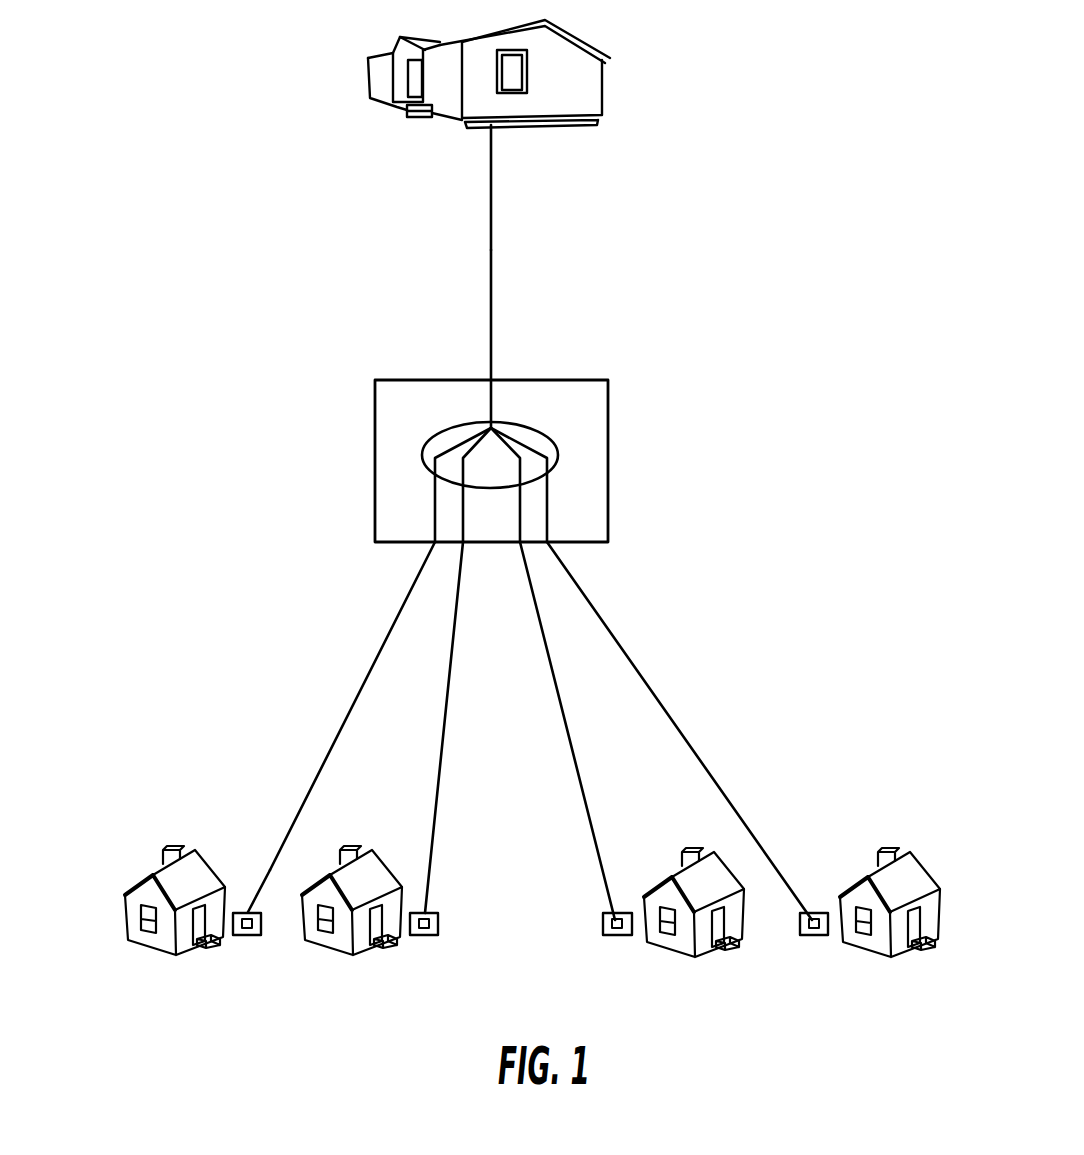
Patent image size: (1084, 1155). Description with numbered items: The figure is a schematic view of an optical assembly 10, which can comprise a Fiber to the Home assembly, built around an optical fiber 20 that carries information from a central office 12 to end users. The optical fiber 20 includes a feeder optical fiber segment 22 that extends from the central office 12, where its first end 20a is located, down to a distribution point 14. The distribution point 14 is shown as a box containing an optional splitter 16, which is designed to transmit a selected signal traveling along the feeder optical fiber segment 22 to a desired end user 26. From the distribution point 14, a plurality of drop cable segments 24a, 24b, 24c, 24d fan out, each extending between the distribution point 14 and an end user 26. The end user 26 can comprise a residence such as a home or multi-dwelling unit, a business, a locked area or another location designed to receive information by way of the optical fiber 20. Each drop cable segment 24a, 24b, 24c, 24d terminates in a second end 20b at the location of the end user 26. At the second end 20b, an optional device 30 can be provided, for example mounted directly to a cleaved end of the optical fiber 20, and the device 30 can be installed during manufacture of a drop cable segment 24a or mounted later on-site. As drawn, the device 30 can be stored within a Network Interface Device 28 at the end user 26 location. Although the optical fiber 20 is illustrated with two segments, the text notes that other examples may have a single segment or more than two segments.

The optical assembly 10 is at (662, 348).
The central office 12 is at (603, 82).
The distribution point 14 is at (608, 503).
The splitter 16 is at (555, 438).
The optical fiber 20 is at (515, 357).
The first end 20a is at (491, 147).
The second end 20b is at (261, 923).
The feeder optical fiber segment 22 is at (491, 255).
The drop cable segment 24a is at (325, 765).
The drop cable segment 24b is at (443, 748).
The drop cable segment 24c is at (578, 770).
The drop cable segment 24d is at (698, 757).
The end user 26 is at (130, 917).
The Network Interface Device 28 is at (243, 913).
The device 30 is at (247, 935).